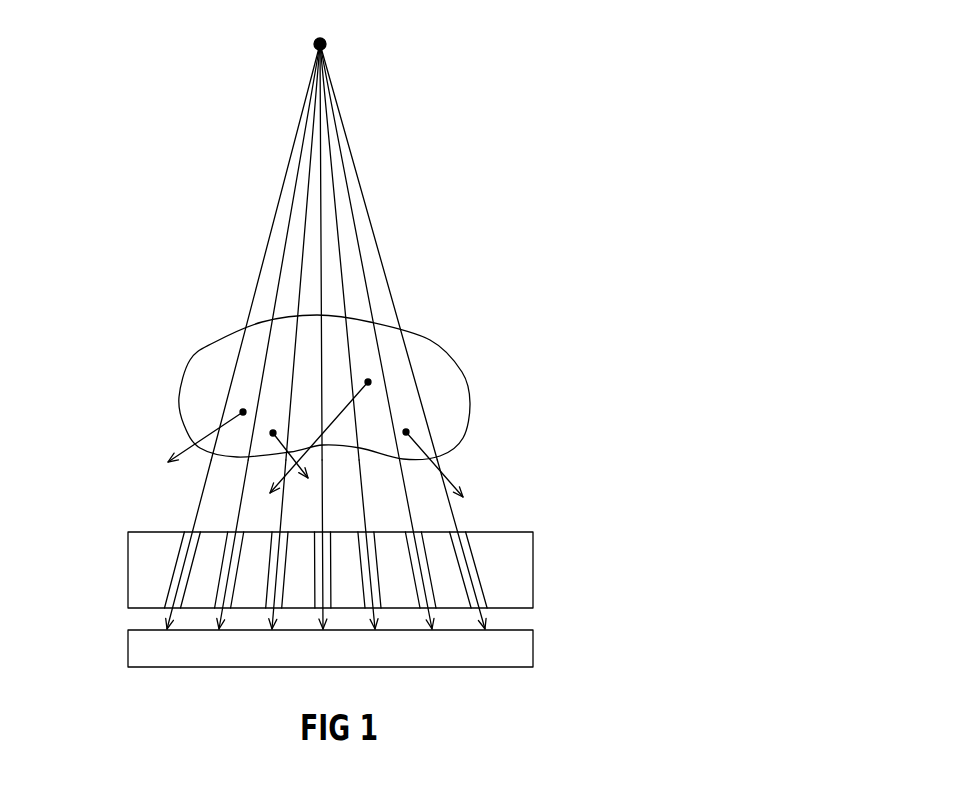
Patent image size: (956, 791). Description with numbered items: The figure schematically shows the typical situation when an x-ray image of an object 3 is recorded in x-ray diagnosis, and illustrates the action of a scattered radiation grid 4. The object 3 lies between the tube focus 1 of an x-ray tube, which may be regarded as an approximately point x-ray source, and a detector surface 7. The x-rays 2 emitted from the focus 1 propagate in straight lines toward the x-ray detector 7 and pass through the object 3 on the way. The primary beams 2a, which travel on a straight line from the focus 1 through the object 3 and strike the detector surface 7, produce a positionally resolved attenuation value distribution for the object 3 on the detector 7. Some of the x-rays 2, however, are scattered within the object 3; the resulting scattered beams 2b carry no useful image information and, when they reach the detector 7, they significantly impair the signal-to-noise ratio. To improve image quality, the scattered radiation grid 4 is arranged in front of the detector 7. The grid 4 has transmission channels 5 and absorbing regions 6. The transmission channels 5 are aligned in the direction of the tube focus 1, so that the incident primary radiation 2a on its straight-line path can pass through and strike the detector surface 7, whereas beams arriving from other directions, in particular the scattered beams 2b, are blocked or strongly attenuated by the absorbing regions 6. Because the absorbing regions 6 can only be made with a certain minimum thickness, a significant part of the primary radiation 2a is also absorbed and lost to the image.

The tube focus 1 is at (325, 47).
The x-rays 2 is at (350, 197).
The primary beams 2a is at (453, 517).
The scattered beams 2b is at (453, 480).
The object 3 is at (437, 366).
The scattered radiation grid 4 is at (342, 524).
The transmission channels 5 is at (183, 530).
The absorbing regions 6 is at (202, 583).
The detector surface 7 is at (515, 651).